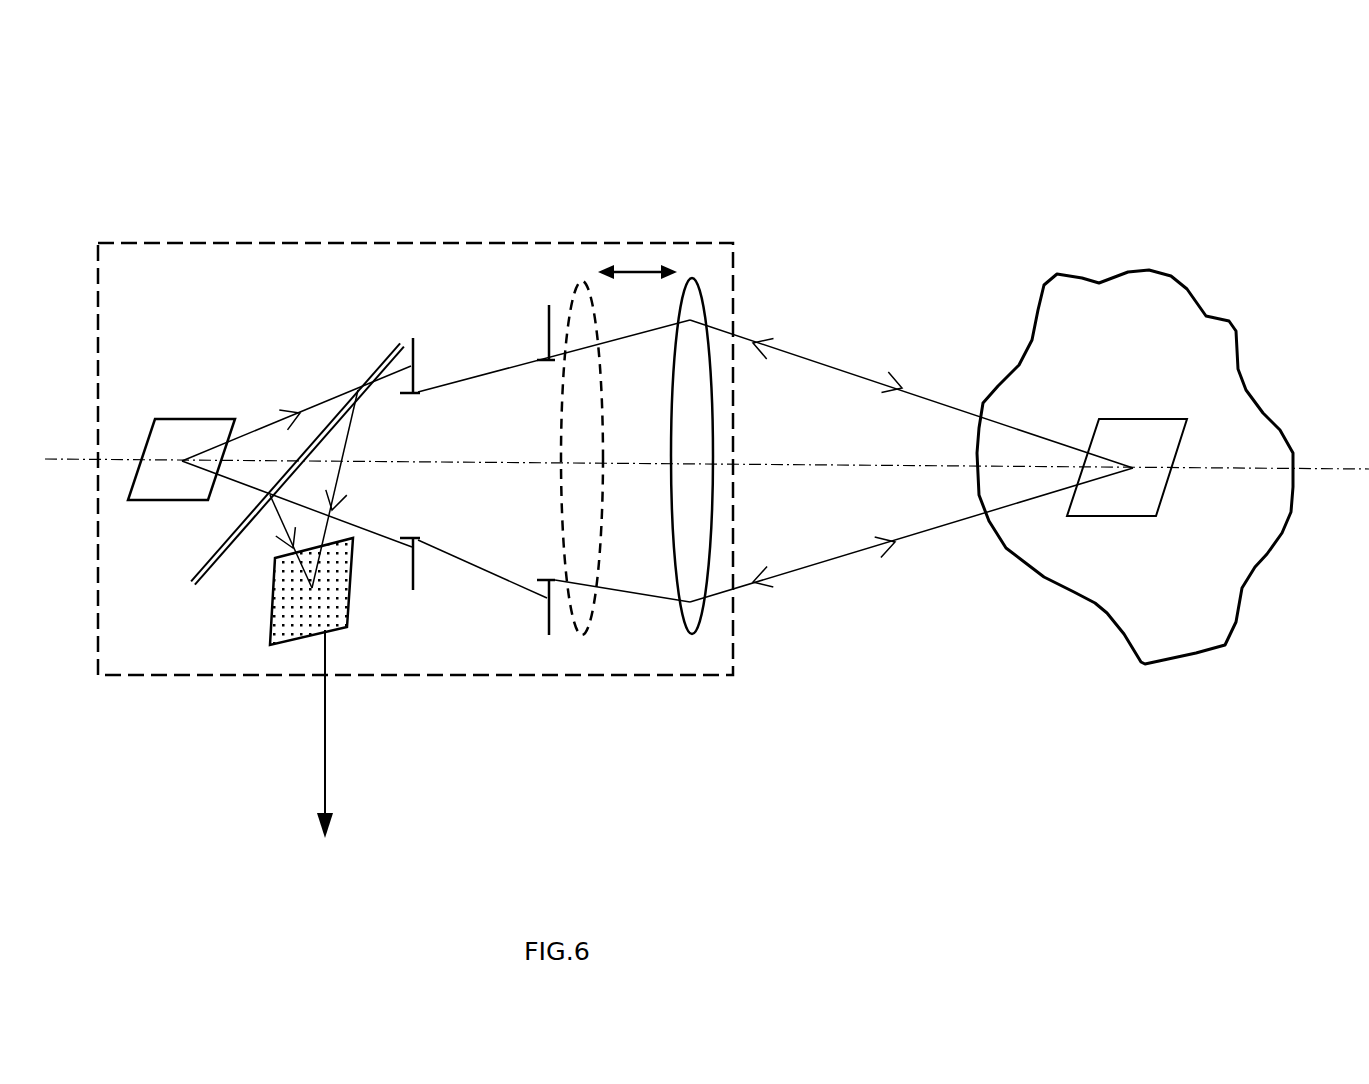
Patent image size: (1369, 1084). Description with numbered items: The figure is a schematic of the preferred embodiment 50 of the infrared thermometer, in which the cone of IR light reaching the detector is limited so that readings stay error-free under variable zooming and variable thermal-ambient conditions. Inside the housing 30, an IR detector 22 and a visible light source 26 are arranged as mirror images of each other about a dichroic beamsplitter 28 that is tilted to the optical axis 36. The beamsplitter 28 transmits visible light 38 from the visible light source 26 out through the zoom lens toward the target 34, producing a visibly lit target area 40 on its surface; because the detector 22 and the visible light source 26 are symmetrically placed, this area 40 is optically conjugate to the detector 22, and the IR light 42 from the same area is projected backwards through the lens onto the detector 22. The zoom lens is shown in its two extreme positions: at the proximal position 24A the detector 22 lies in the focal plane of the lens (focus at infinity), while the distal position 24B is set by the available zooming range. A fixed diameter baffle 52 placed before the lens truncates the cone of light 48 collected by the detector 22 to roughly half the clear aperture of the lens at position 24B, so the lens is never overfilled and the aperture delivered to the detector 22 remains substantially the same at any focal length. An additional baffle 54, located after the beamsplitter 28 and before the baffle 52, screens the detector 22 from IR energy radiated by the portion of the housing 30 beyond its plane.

The IR detector 22 is at (298, 620).
The proximal lens position 24A is at (583, 282).
The distal lens position 24B is at (692, 303).
The visible light source 26 is at (180, 418).
The dichroic beamsplitter 28 is at (398, 350).
The housing 30 is at (230, 242).
The target 34 is at (1141, 310).
The optical axis 36 is at (890, 463).
The visible light 38 is at (290, 412).
The visibly lit target area 40 is at (1147, 495).
The IR light 42 is at (792, 356).
The cone of light 48 is at (640, 568).
The IRT preferred embodiment 50 is at (700, 113).
The fixed diameter baffle 52 is at (547, 615).
The thermal background baffle 54 is at (415, 580).